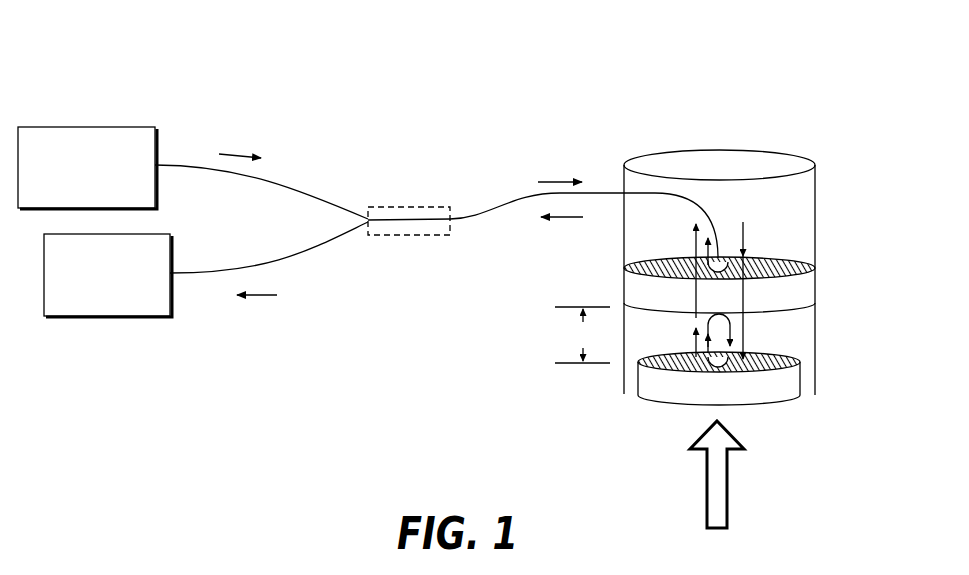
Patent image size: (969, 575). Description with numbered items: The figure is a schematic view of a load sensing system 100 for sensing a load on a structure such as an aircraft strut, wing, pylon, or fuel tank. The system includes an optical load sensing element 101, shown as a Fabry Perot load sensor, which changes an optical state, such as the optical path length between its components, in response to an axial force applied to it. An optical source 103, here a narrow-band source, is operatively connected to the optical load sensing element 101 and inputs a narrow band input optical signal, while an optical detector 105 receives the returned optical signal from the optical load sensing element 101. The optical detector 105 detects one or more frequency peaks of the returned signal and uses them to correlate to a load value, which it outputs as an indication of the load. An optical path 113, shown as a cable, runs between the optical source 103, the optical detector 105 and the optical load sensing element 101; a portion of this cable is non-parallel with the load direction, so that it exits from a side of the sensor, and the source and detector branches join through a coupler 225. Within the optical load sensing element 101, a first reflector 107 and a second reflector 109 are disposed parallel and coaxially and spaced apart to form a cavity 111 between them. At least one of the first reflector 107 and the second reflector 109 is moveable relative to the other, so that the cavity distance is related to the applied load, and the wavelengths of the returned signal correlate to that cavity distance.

The load sensing system 100 is at (194, 87).
The optical source 103 is at (82, 128).
The optical detector 105 is at (105, 300).
The coupler 225 is at (435, 228).
The optical path 113 is at (505, 202).
The optical load sensing element 101 is at (815, 178).
The first reflector 107 is at (803, 288).
The second reflector 109 is at (786, 380).
The cavity 111 is at (666, 336).